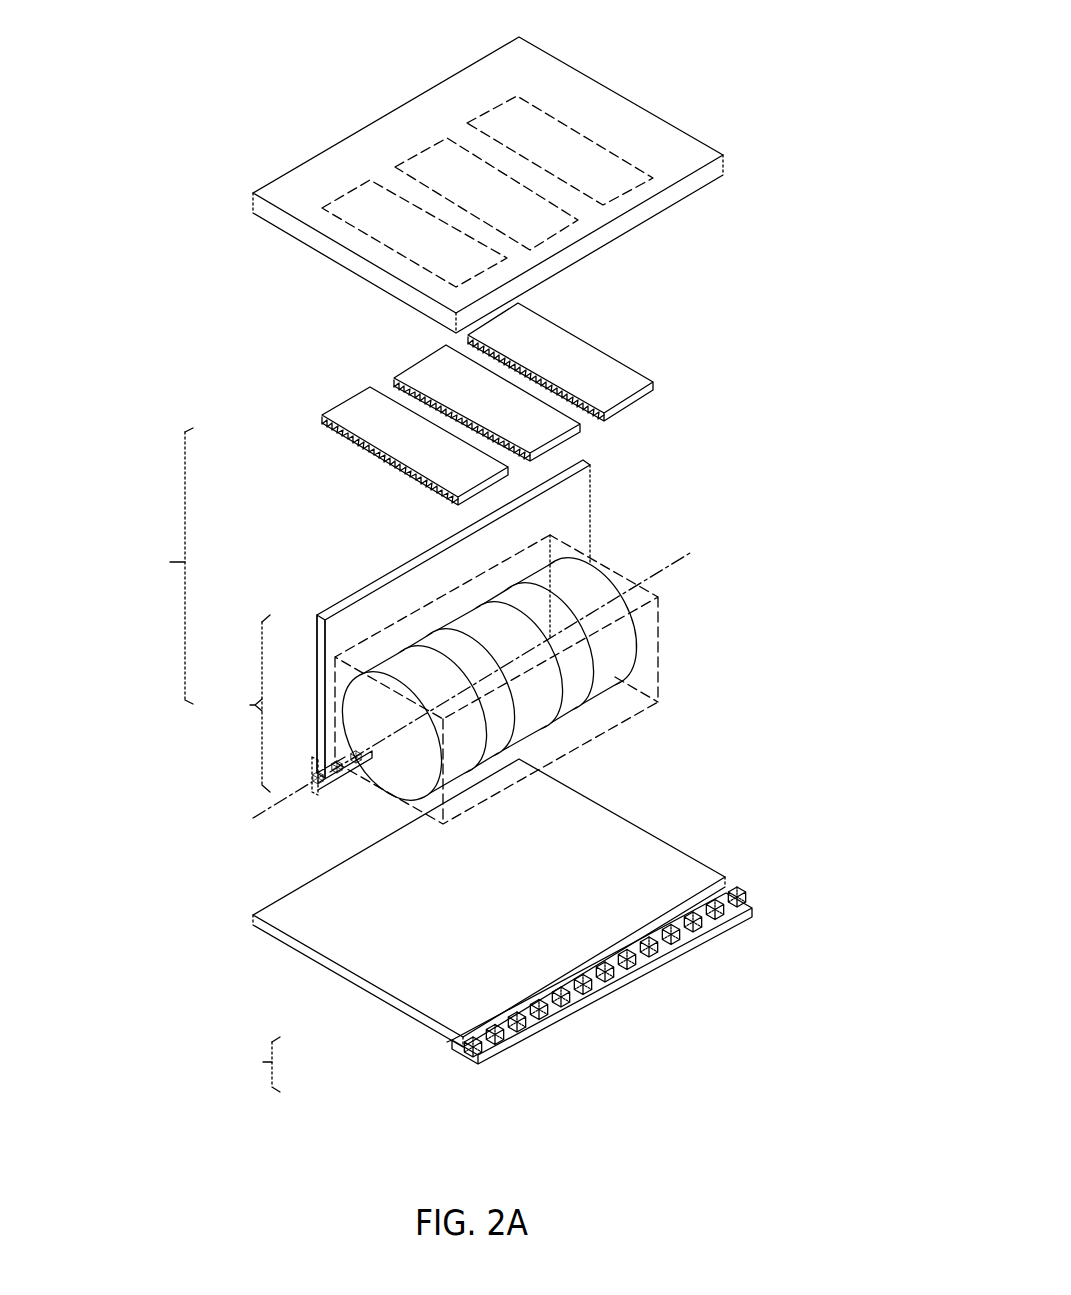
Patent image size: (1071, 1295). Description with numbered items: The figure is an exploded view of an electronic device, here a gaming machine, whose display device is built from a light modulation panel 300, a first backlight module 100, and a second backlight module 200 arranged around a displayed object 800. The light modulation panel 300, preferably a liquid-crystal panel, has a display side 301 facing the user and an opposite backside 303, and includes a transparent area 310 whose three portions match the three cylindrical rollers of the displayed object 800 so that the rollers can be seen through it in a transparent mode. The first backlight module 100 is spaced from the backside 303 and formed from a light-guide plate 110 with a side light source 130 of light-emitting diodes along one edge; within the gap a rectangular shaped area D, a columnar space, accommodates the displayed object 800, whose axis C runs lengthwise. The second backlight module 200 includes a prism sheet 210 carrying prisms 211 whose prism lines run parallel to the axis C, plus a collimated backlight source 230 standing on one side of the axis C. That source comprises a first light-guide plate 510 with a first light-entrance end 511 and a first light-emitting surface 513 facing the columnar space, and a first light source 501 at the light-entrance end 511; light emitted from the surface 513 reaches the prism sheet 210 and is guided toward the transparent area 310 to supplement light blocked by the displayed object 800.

The first backlight module 100 is at (251, 1064).
The light-guide plate 110 is at (410, 972).
The side light source 130 is at (473, 1052).
The second backlight module 200 is at (159, 566).
The prism sheet 210 is at (365, 416).
The prisms 211 is at (400, 469).
The collimated backlight source 230 is at (244, 703).
The light modulation panel 300 is at (673, 148).
The display side 301 is at (609, 106).
The backside 303 is at (664, 238).
The transparent area 310 is at (385, 245).
The first light source 501 is at (318, 781).
The first light-guide plate 510 is at (317, 656).
The first light-entrance end 511 is at (336, 785).
The first light-emitting surface 513 is at (584, 511).
The displayed object 800 is at (638, 631).
The axis C is at (688, 553).
The rectangular shaped area D is at (666, 690).